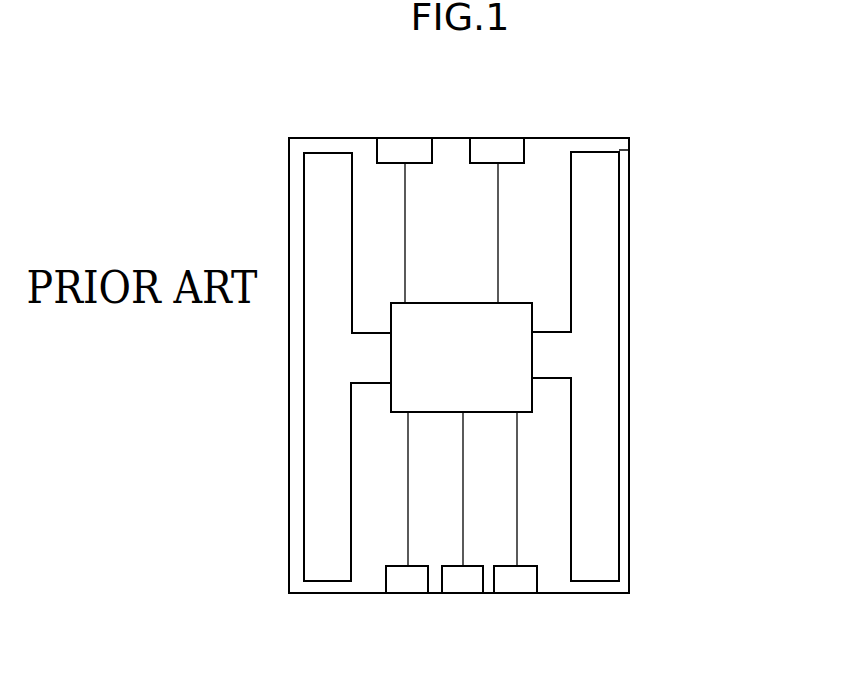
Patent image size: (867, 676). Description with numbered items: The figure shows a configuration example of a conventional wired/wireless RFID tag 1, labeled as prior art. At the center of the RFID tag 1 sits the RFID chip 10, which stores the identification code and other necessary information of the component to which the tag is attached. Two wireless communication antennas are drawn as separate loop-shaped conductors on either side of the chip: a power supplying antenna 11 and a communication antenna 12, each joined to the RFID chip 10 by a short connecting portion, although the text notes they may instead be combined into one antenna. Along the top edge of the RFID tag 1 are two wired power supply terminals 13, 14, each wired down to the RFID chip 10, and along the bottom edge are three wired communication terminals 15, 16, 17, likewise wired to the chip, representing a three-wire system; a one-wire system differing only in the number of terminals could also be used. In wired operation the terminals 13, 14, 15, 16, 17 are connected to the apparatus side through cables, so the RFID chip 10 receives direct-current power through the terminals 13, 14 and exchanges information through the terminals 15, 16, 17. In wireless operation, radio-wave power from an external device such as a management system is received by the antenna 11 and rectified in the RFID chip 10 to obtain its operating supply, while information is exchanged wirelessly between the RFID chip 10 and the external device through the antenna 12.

The RFID tag 1 is at (578, 138).
The RFID chip 10 is at (496, 413).
The power supplying antenna 11 is at (621, 182).
The communication antenna 12 is at (302, 511).
The wired power supply terminal 13 is at (404, 138).
The wired power supply terminal 14 is at (497, 138).
The wired communication terminal 15 is at (409, 583).
The wired communication terminal 16 is at (467, 590).
The wired communication terminal 17 is at (517, 588).